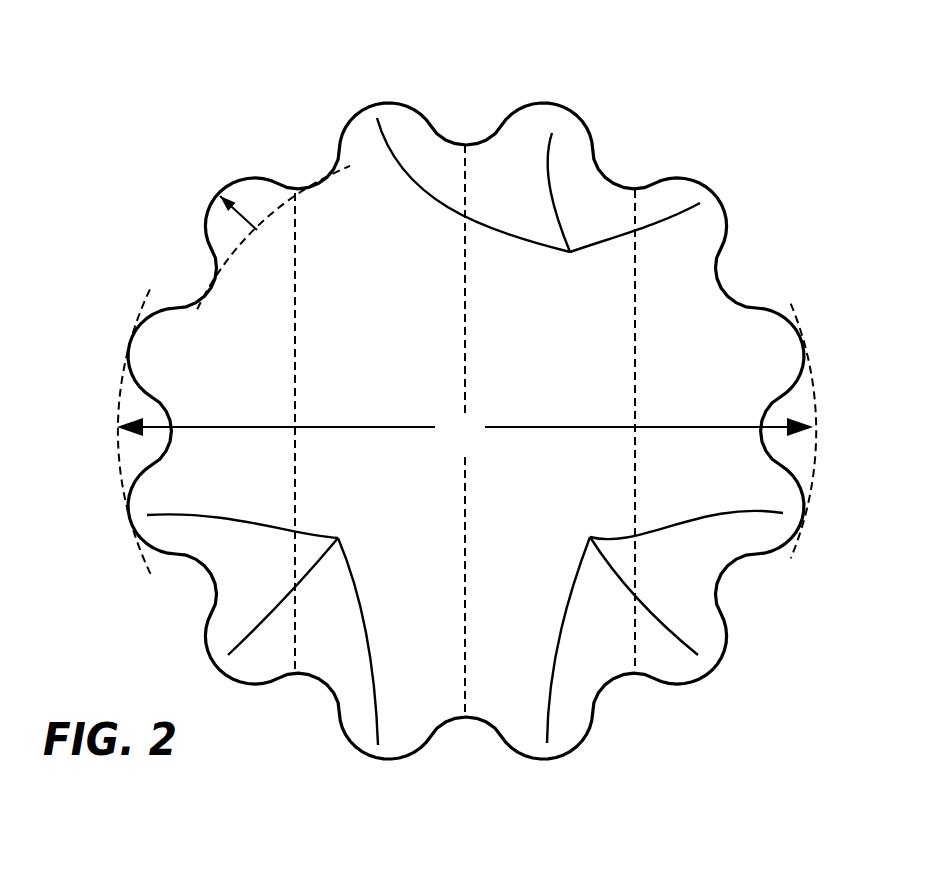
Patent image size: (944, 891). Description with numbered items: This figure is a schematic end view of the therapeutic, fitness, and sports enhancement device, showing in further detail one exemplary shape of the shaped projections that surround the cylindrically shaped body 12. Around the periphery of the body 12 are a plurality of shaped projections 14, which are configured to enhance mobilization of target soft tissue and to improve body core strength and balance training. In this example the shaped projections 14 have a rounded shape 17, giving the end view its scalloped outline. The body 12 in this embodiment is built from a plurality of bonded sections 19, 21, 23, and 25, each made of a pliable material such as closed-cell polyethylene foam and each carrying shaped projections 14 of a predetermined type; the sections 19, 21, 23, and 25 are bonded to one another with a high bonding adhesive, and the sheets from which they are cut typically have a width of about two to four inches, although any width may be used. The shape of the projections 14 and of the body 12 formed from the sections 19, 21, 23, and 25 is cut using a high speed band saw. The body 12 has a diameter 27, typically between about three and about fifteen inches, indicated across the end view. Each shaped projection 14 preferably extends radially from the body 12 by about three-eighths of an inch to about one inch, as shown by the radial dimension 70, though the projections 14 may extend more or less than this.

The cylindrically shaped body 12 is at (253, 147).
The shaped projections 14 is at (465, 431).
The rounded shape 17 is at (381, 103).
The section 19 is at (213, 361).
The section 21 is at (371, 361).
The section 23 is at (536, 361).
The section 25 is at (703, 362).
The diameter 27 is at (465, 432).
The radial extent of shaped projections 70 is at (257, 230).